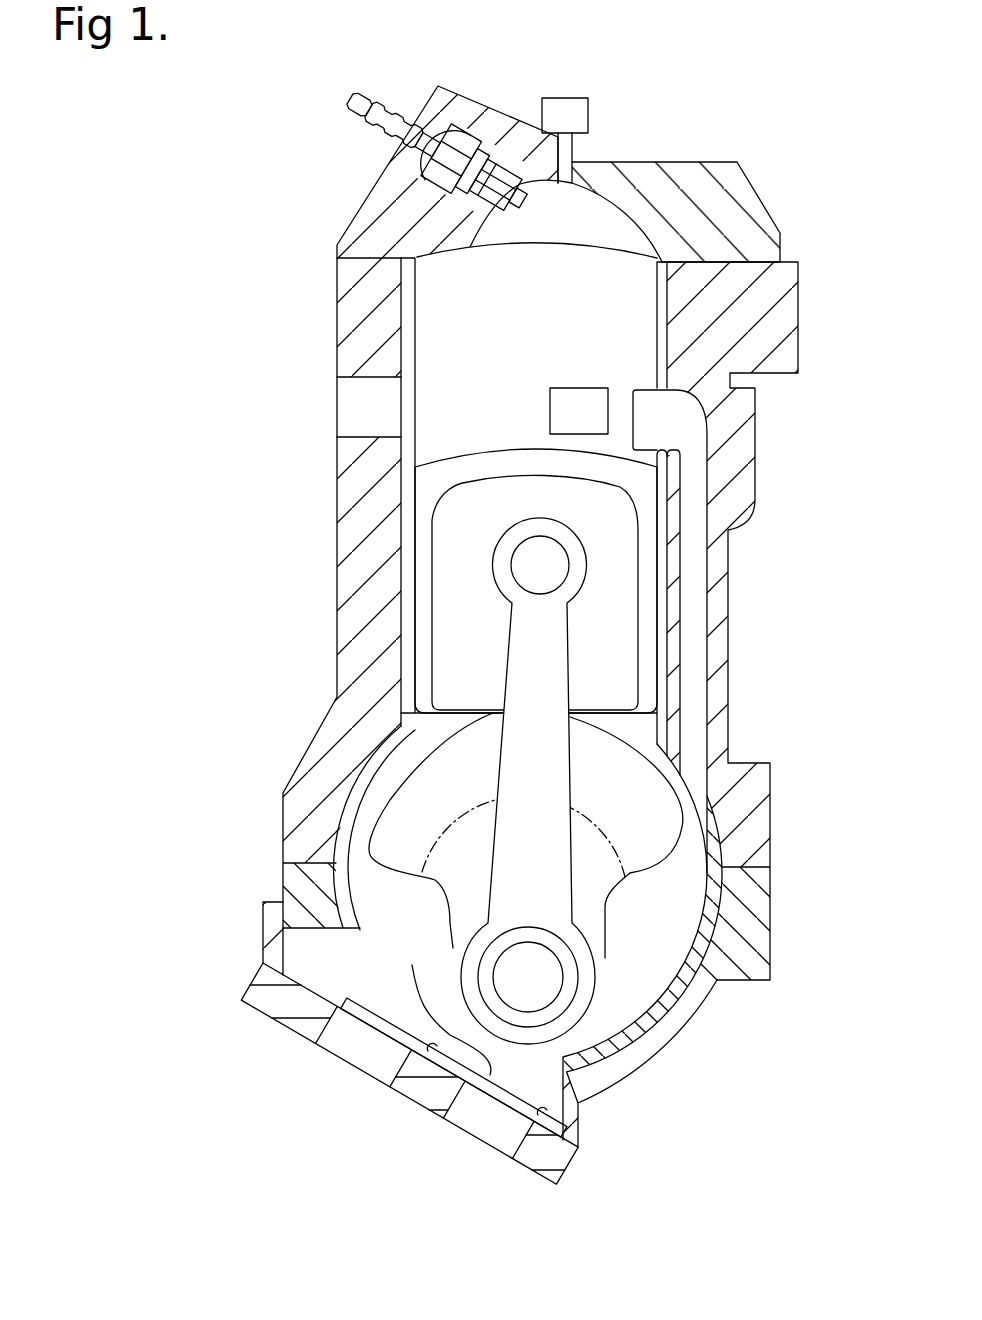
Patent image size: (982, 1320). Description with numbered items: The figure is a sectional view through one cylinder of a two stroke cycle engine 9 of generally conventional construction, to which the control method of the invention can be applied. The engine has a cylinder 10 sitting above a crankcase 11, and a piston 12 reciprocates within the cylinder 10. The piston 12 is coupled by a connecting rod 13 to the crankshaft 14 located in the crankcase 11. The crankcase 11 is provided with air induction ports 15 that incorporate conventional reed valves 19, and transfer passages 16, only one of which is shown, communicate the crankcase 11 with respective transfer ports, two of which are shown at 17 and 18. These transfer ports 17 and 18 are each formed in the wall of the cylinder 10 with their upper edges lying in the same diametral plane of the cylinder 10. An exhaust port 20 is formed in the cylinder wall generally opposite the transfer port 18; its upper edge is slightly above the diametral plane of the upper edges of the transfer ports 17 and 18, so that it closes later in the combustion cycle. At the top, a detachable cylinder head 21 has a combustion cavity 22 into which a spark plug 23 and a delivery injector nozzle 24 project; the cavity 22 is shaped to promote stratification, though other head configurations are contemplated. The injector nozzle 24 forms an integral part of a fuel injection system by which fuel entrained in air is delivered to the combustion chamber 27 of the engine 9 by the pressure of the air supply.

The engine 9 is at (200, 553).
The cylinder 10 is at (443, 379).
The crankcase 11 is at (390, 895).
The piston 12 is at (422, 590).
The connecting rod 13 is at (513, 834).
The crankshaft 14 is at (508, 992).
The air induction ports 15 is at (355, 1055).
The transfer passages 16 is at (693, 700).
The transfer port 17 is at (565, 403).
The transfer port 18 is at (695, 448).
The reed valves 19 is at (378, 1017).
The exhaust port 20 is at (373, 412).
The cylinder head 21 is at (742, 197).
The combustion cavity 22 is at (597, 206).
The spark plug 23 is at (400, 103).
The delivery injector nozzle 24 is at (594, 150).
The combustion chamber 27 is at (523, 306).